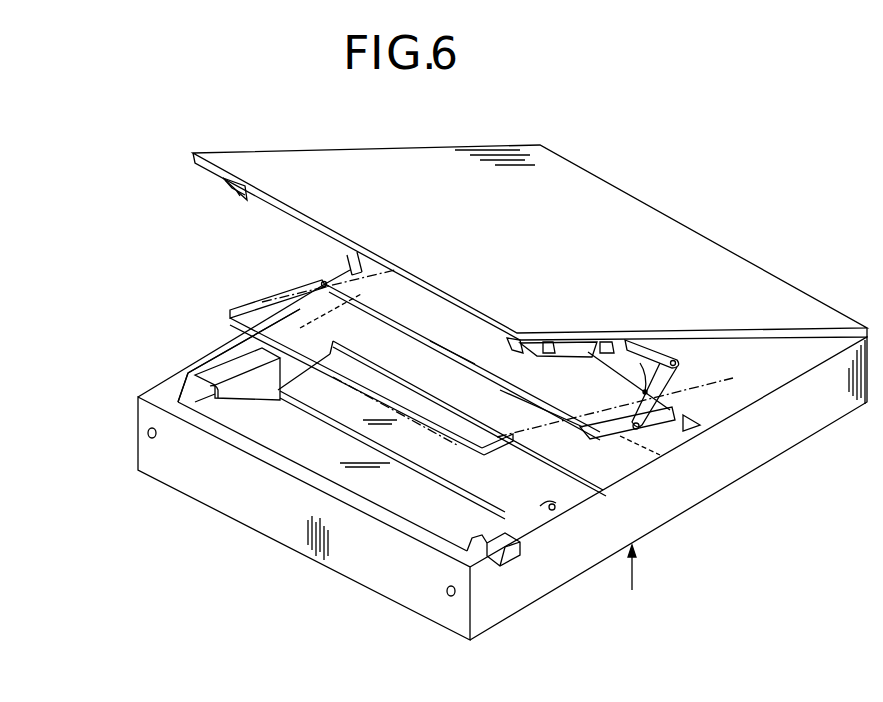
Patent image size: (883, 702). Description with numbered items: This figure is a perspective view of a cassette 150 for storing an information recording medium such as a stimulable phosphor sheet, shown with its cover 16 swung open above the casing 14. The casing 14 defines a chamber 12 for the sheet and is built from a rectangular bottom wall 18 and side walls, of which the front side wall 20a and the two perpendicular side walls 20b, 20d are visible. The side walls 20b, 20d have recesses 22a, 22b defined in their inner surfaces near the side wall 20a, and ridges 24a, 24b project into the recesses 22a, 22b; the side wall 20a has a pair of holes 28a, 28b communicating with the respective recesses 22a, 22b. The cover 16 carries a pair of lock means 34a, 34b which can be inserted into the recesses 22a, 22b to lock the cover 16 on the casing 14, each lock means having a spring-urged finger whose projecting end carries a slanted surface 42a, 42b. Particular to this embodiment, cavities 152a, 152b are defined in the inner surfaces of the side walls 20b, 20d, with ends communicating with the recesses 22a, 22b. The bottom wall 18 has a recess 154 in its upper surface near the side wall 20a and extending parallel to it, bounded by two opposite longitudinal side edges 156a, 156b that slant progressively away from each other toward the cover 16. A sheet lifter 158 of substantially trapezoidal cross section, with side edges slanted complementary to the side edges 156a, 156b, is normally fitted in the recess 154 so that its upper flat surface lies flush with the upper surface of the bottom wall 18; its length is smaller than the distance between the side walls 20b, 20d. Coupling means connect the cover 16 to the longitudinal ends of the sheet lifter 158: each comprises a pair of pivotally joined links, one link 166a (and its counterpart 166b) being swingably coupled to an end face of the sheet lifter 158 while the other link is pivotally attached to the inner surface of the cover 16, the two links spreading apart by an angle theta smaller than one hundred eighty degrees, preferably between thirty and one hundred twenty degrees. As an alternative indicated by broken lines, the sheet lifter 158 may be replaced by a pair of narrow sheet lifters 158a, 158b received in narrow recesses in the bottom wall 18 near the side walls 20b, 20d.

The chamber 12 is at (397, 503).
The casing 14 is at (634, 581).
The cover 16 is at (765, 286).
The bottom wall 18 is at (382, 340).
The side wall 20a is at (262, 503).
The side wall 20b is at (552, 573).
The side wall 20d is at (197, 365).
The recess 22a is at (498, 545).
The recess 22b is at (228, 362).
The ridge 24a is at (470, 548).
The ridge 24b is at (178, 387).
The hole 28a is at (447, 594).
The hole 28b is at (148, 436).
The lock means 34a is at (545, 323).
The lock means 34b is at (234, 173).
The slanted surface 42a is at (470, 364).
The slanted surface 42b is at (233, 190).
The cassette 150 is at (695, 212).
The cavity 152a is at (567, 508).
The cavity 152b is at (318, 313).
The recess 154 is at (332, 402).
The longitudinal side edge 156a is at (603, 492).
The longitudinal side edge 156b is at (552, 510).
The sheet lifter 158 is at (500, 378).
The narrow sheet lifter 158a is at (660, 455).
The narrow sheet lifter 158b is at (323, 317).
The link 166a is at (675, 420).
The link 166b is at (350, 262).